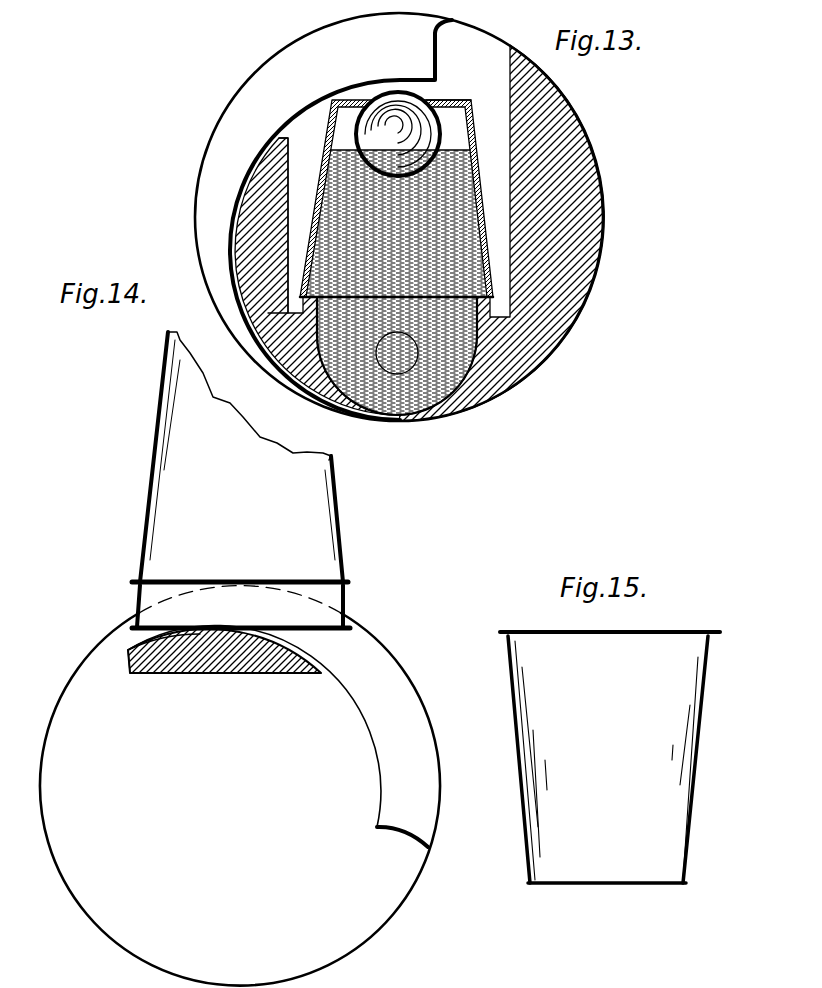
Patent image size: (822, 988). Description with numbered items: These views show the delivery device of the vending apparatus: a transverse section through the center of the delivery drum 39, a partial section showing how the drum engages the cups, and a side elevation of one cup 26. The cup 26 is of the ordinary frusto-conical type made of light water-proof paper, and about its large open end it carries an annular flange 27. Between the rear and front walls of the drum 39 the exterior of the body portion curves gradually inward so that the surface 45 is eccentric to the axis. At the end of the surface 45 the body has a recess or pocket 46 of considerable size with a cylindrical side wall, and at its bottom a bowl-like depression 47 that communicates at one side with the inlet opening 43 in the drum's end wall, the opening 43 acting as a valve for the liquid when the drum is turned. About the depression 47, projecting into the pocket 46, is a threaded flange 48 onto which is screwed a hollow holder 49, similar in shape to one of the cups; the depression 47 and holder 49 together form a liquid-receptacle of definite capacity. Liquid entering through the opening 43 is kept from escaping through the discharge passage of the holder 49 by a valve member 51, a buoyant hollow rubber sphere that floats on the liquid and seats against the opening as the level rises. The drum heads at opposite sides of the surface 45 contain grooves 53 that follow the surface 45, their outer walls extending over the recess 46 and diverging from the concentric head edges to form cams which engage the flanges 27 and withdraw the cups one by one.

In FIG. 14, the cup 26 is at (343, 562).
In FIG. 15, the cup 26 is at (698, 770).
In FIG. 14, the annular flange 27 is at (132, 582).
In FIG. 15, the annular flange 27 is at (720, 633).
In FIG. 13, the drum 39 is at (399, 217).
In FIG. 14, the drum 39 is at (246, 786).
In FIG. 13, the inlet opening 43 is at (560, 300).
In FIG. 13, the eccentric surface 45 is at (237, 282).
In FIG. 14, the eccentric surface 45 is at (128, 636).
In FIG. 13, the recess or pocket 46 is at (407, 198).
In FIG. 13, the bowl-like depression 47 is at (447, 375).
In FIG. 13, the threaded flange 48 is at (502, 313).
In FIG. 13, the hollow holder 49 is at (472, 102).
In FIG. 13, the valve member 51 is at (395, 128).
In FIG. 13, the grooves 53 is at (245, 203).
In FIG. 14, the grooves 53 is at (137, 636).